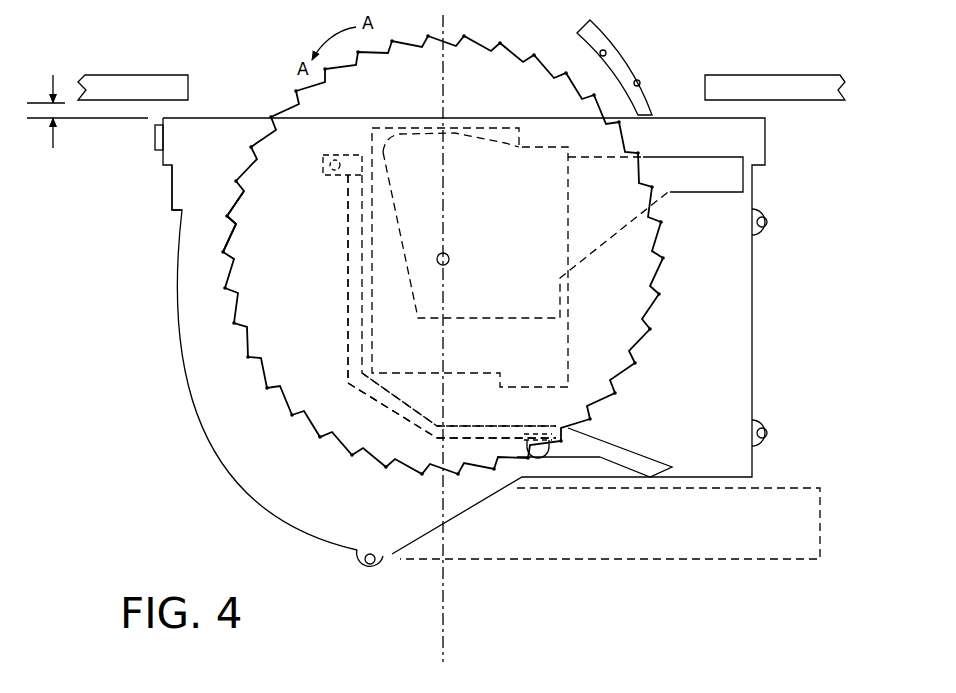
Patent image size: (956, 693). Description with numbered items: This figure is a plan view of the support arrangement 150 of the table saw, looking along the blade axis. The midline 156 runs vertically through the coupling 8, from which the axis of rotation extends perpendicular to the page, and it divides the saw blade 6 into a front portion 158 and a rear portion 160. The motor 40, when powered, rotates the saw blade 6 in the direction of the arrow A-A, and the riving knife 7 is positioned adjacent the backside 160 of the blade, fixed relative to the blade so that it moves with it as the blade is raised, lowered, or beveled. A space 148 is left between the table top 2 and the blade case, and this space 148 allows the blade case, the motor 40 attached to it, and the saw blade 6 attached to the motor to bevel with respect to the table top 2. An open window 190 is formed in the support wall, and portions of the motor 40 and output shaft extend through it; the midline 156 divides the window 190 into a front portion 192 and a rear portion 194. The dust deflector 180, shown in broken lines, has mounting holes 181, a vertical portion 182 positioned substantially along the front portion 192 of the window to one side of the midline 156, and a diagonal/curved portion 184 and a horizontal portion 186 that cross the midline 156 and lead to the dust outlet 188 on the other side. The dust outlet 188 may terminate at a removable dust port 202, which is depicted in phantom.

The table top 2 is at (820, 75).
The saw blade 6 is at (468, 34).
The riving knife 7 is at (612, 40).
The coupling 8 is at (450, 259).
The motor 40 is at (735, 157).
The space 148 is at (56, 130).
The support arrangement 150 is at (125, 217).
The midline 156 is at (444, 593).
The front portion 158 is at (222, 283).
The rear portion 160 is at (672, 251).
The dust deflector 180 is at (338, 217).
The mounting holes 181 is at (323, 168).
The vertical portion 182 is at (345, 258).
The diagonal/curved portion 184 is at (412, 426).
The horizontal portion 186 is at (465, 427).
The dust outlet 188 is at (652, 458).
The window 190 is at (416, 382).
The front portion 192 is at (372, 285).
The rear portion 194 is at (568, 241).
The removable dust port 202 is at (690, 568).